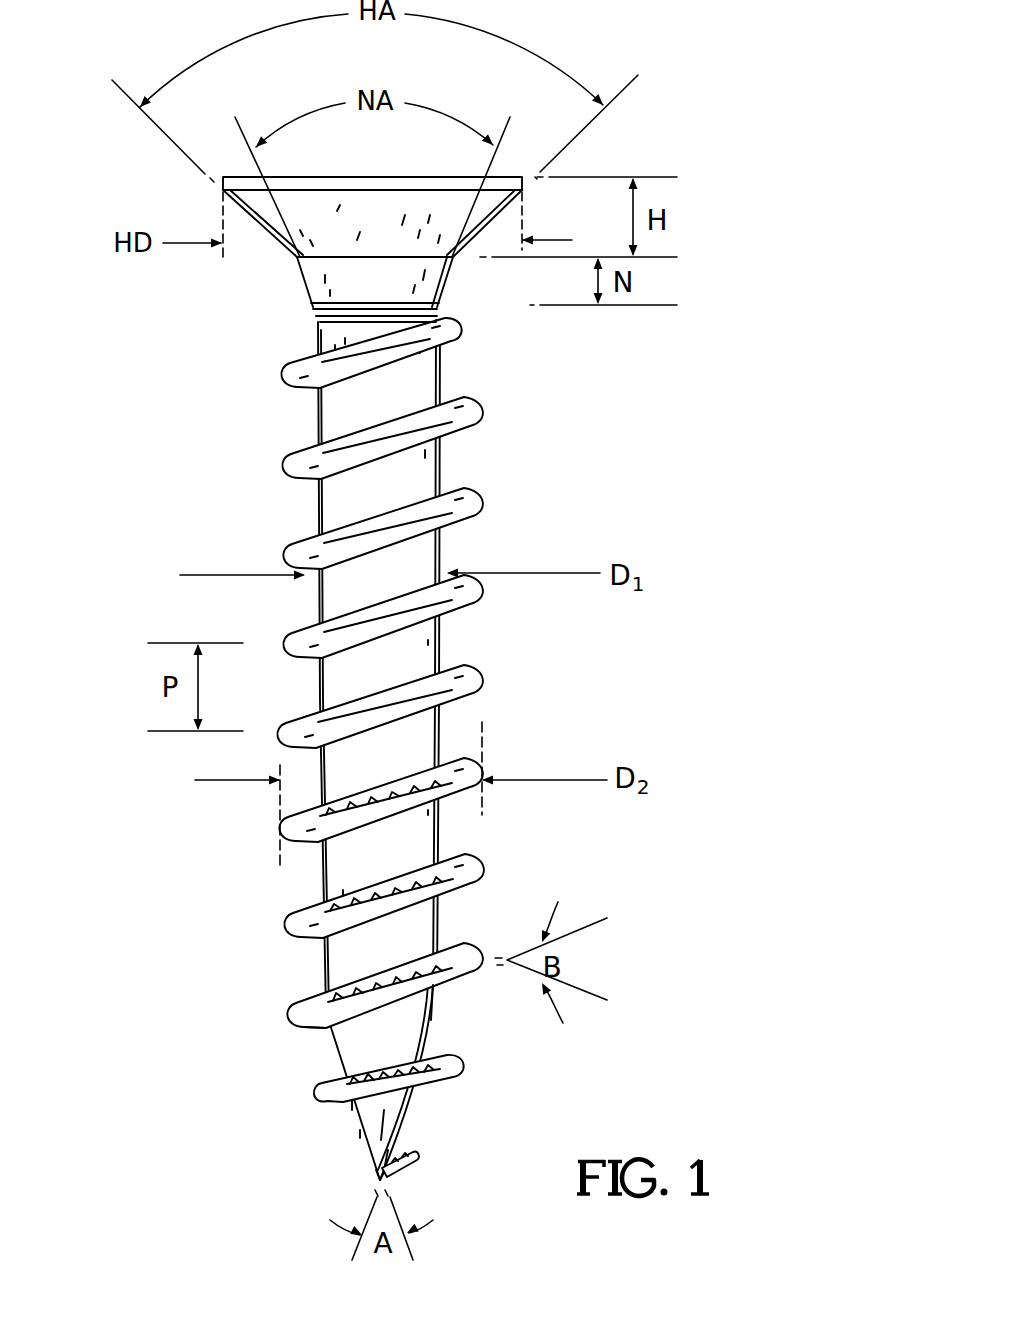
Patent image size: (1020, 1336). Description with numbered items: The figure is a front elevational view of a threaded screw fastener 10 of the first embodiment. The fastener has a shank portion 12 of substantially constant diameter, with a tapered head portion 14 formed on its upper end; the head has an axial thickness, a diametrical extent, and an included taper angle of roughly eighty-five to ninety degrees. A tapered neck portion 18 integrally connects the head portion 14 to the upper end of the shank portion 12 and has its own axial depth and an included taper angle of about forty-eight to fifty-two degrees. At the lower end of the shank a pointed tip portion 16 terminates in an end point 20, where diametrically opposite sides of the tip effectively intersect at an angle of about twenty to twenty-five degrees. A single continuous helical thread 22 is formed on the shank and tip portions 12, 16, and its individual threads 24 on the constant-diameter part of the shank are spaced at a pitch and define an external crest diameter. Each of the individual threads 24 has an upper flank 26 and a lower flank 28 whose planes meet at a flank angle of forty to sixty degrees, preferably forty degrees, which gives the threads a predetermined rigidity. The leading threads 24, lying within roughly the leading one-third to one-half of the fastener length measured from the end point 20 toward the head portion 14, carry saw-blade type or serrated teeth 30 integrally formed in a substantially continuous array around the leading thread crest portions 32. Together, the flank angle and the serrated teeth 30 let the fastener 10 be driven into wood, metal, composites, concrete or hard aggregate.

The threaded screw fastener 10 is at (381, 691).
The shank portion 12 is at (410, 467).
The tapered head portion 14 is at (300, 232).
The pointed tip portion 16 is at (400, 1118).
The tapered neck portion 18 is at (313, 290).
The end point 20 is at (380, 1179).
The single continuous helical thread 22 is at (291, 548).
The individual threads 24 is at (465, 672).
The upper flank 26 is at (450, 953).
The lower flank 28 is at (325, 1021).
The saw-blade type or serrated teeth 30 is at (427, 988).
The leading thread crest portions 32 is at (283, 827).